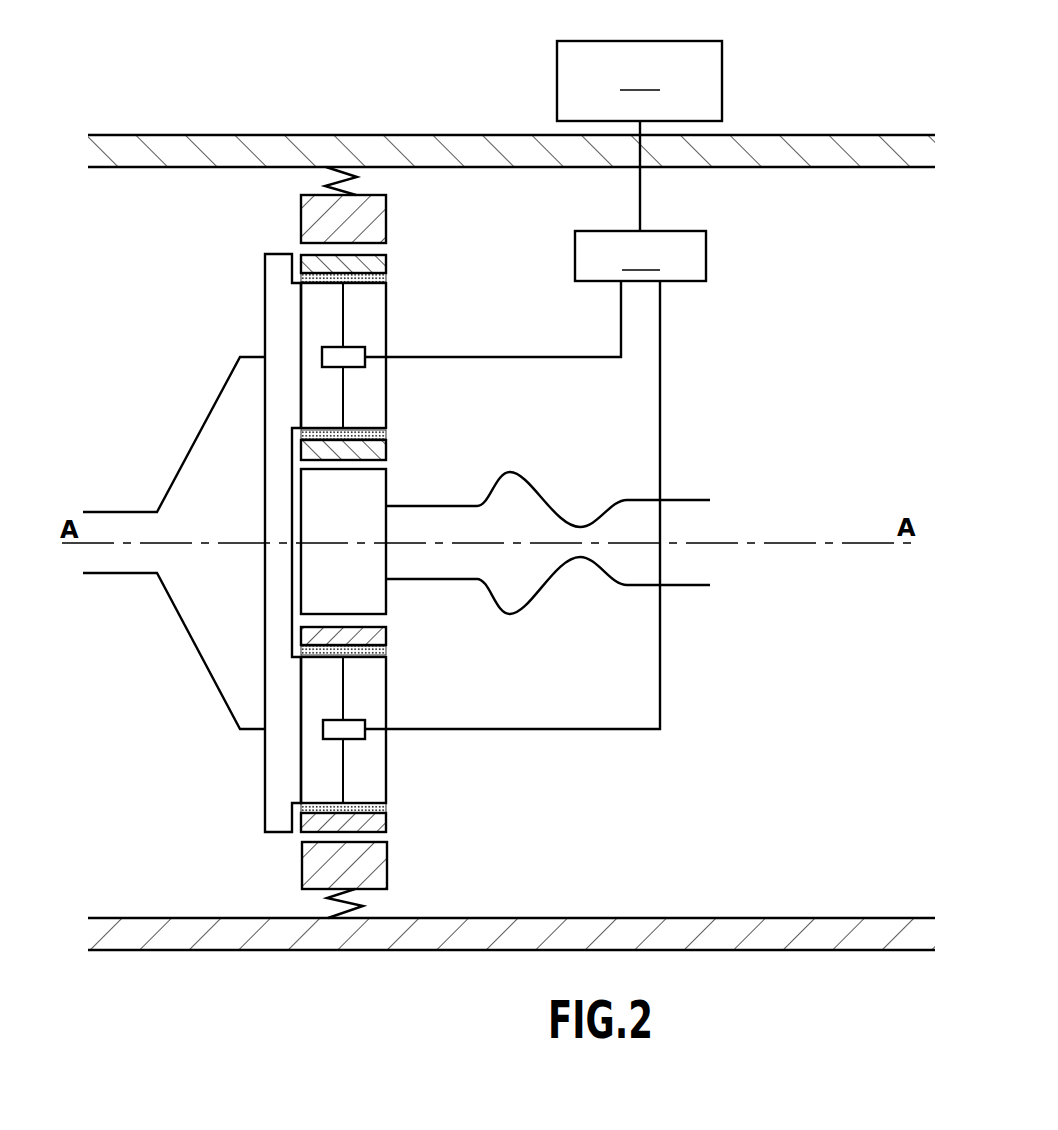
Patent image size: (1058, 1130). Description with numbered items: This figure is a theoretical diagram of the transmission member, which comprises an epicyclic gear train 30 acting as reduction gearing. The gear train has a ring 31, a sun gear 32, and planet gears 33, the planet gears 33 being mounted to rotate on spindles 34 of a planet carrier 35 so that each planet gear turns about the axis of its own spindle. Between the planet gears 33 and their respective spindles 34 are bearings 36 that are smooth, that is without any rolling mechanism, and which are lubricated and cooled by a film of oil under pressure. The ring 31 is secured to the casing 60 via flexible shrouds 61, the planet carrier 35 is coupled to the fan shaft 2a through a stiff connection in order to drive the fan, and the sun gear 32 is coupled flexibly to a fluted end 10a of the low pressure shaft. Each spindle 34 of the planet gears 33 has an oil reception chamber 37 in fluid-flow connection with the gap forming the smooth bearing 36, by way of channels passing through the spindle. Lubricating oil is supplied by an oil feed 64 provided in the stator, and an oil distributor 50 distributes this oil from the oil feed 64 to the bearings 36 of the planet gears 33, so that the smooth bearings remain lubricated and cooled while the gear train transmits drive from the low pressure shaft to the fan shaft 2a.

The fan shaft 2a is at (92, 510).
The fluted end of the low pressure shaft 10a is at (458, 504).
The epicyclic gear train 30 is at (198, 395).
The ring 31 is at (372, 225).
The sun gear 32 is at (372, 562).
The planet gears 33 is at (382, 445).
The spindles 34 is at (360, 335).
The planet carrier 35 is at (278, 299).
The bearings 36 is at (378, 277).
The oil reception chamber 37 is at (372, 365).
The oil distributor 50 is at (535, 480).
The casing 60 is at (192, 155).
The flexible shrouds 61 is at (358, 178).
The oil feed 64 is at (639, 136).